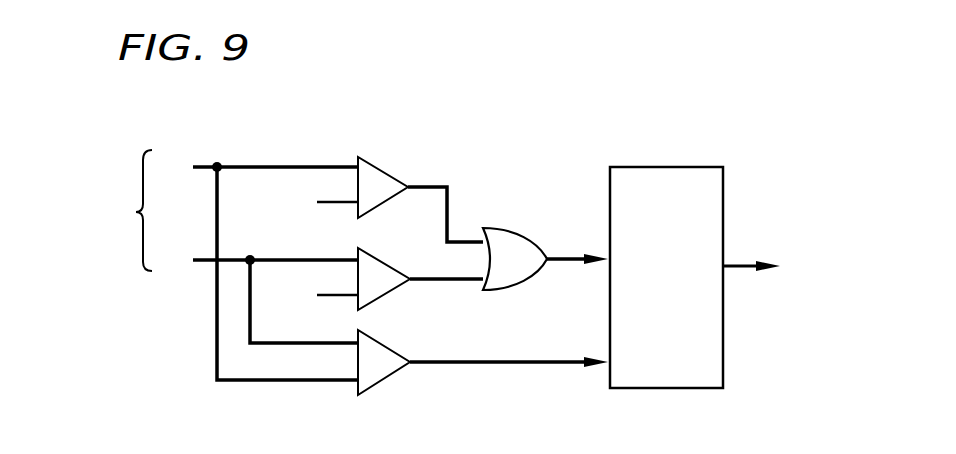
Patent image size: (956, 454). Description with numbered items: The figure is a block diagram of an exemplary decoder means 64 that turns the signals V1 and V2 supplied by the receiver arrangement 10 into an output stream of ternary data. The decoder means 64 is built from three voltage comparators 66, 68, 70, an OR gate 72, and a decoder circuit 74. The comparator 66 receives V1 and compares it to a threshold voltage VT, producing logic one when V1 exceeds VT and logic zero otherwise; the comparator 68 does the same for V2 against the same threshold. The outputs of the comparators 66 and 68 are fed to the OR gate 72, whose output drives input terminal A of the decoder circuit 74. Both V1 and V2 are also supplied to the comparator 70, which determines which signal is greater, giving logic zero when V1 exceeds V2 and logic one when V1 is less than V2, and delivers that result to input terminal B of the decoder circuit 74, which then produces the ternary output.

The receiver arrangement 10 is at (87, 210).
The decoder means 64 is at (505, 93).
The voltage comparator 66 is at (377, 158).
The voltage comparator 68 is at (366, 251).
The voltage comparator 70 is at (375, 341).
The OR gate 72 is at (520, 237).
The decoder circuit 74 is at (672, 167).